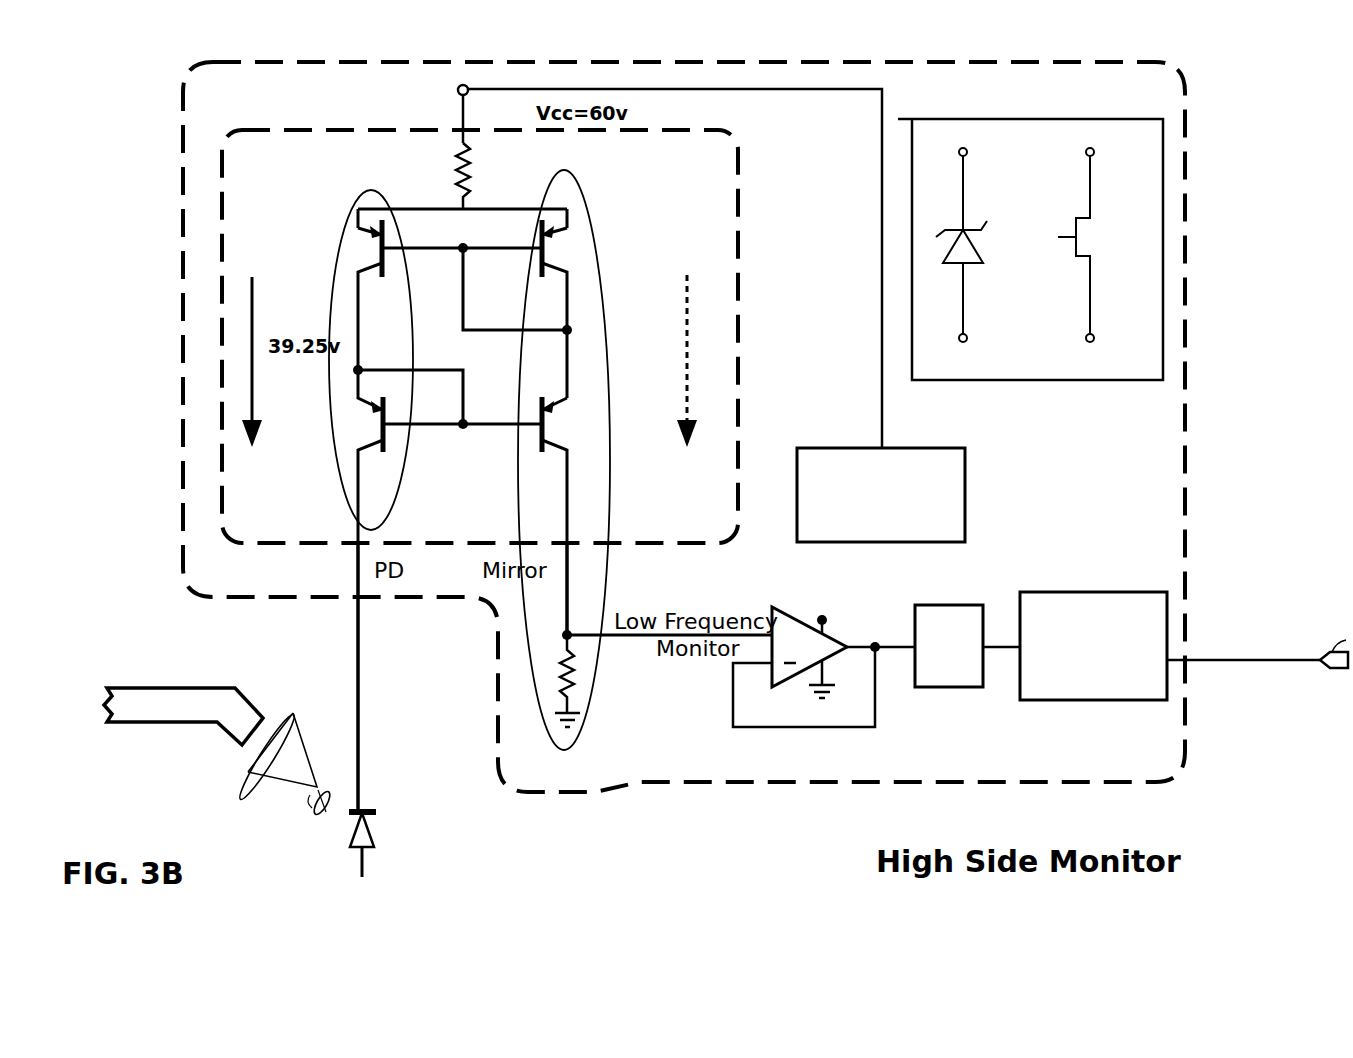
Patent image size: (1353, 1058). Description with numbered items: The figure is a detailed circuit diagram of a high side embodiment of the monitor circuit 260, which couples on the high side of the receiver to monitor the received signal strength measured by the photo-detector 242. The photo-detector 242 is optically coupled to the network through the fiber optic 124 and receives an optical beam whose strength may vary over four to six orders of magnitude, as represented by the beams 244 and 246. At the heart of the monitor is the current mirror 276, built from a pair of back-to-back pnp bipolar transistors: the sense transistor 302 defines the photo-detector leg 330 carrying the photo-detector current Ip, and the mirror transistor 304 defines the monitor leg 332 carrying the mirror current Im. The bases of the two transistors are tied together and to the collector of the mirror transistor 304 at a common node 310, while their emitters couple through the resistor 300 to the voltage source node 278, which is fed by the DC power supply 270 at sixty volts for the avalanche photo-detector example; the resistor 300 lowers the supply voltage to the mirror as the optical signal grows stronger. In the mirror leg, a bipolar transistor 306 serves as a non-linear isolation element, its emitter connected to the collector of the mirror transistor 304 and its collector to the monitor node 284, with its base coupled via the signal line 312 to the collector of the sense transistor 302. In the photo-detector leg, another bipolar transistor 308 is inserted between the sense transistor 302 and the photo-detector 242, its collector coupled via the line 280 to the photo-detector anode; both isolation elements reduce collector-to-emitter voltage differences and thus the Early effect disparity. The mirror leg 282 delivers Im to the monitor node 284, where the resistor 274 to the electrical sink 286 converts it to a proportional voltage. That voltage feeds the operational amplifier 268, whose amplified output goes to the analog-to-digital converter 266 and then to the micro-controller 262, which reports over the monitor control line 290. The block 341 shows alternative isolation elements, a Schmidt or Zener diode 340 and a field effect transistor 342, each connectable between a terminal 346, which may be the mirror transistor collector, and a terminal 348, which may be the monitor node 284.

The fiber optic 124 is at (160, 687).
The photo-detector 242 is at (375, 845).
The beam 244 is at (313, 822).
The beam 246 is at (242, 800).
The monitor circuit 260 is at (1187, 440).
The micro-controller 262 is at (1125, 592).
The analog-to-digital converter 266 is at (938, 605).
The operational amplifier 268 is at (799, 615).
The DC power supply 270 is at (797, 514).
The resistor 274 is at (582, 672).
The current mirror 276 is at (738, 332).
The voltage source node 278 is at (458, 91).
The line 280 is at (358, 628).
The mirror leg 282 is at (572, 562).
The monitor node 284 is at (563, 632).
The electrical sink 286 is at (584, 718).
The monitor control line 290 is at (1257, 648).
The resistor 300 is at (455, 144).
The sense transistor 302 is at (391, 257).
The mirror transistor 304 is at (533, 258).
The bipolar transistor 306 is at (534, 431).
The bipolar transistor 308 is at (392, 433).
The node 310 is at (471, 226).
The signal line 312 is at (466, 419).
The photo-detector leg 330 is at (369, 192).
The monitor leg 332 is at (560, 182).
The non-linear element 340 is at (975, 246).
The block 341 is at (1092, 119).
The field effect transistor 342 is at (1084, 222).
The terminal 346 is at (968, 152).
The terminal 348 is at (968, 339).